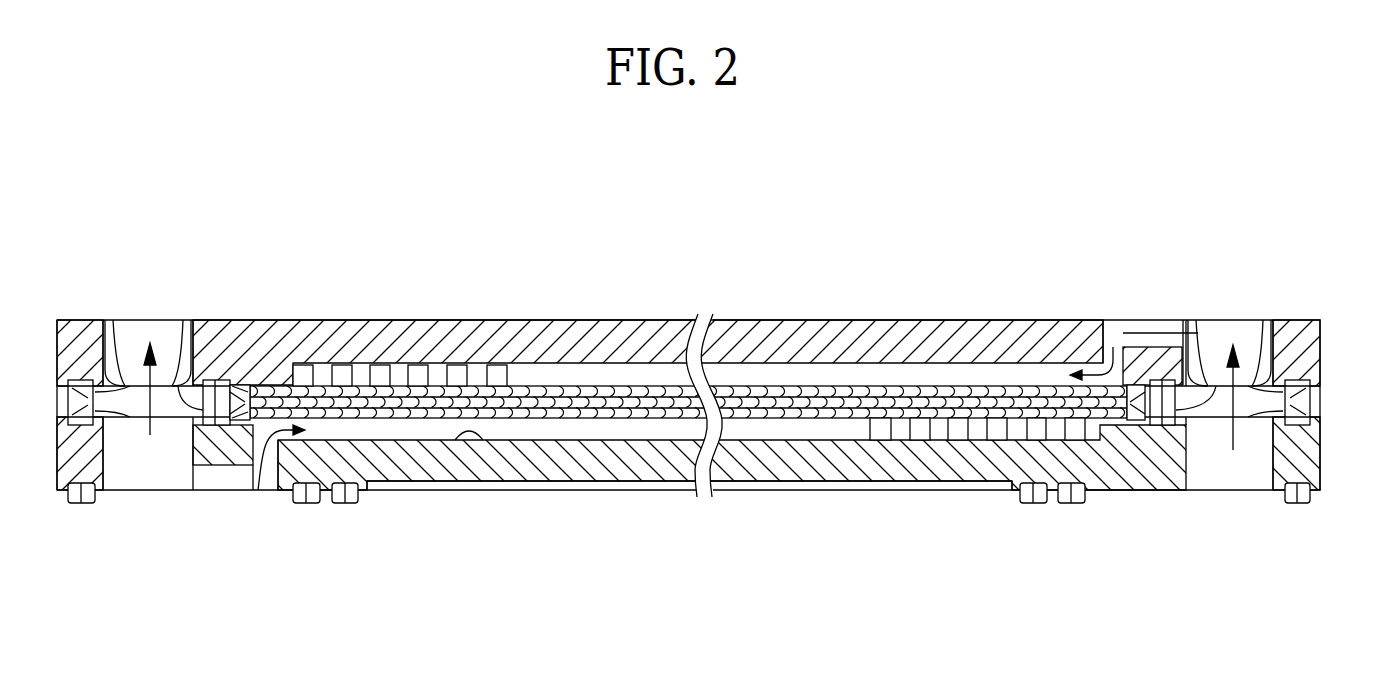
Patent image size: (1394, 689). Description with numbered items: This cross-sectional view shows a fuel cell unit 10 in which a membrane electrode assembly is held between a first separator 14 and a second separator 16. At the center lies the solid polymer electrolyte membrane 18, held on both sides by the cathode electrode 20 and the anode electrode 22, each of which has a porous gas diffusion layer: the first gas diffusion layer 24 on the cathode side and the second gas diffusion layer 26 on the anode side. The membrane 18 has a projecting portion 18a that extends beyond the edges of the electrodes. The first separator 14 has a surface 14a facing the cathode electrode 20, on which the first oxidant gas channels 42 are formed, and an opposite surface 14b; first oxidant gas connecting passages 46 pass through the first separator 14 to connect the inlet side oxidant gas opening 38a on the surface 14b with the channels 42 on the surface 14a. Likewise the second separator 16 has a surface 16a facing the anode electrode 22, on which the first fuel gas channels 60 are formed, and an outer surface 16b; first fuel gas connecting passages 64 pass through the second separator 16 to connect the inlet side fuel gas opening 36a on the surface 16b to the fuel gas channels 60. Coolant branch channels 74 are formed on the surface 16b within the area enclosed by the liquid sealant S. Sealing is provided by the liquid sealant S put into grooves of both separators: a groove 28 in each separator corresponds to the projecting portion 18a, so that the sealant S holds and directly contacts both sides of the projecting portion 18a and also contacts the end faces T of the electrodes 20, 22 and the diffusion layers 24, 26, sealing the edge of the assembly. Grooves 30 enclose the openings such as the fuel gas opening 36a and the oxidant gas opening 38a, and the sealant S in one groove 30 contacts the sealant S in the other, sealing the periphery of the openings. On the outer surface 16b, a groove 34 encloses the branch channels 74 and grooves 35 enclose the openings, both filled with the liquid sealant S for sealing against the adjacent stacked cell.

The fuel cell unit 10 is at (887, 183).
The first separator 14 is at (913, 320).
The surface of first separator opposite the cathode electrode 14a is at (412, 440).
The surface of first separator opposite surface 14a 14b is at (853, 320).
The second separator 16 is at (858, 491).
The surface of second separator 16a is at (482, 440).
The surface of second separator 16b is at (288, 493).
The solid polymer electrolyte membrane 18 is at (532, 386).
The projecting portion 18a is at (1135, 385).
The cathode electrode 20 is at (305, 365).
The anode electrode 22 is at (620, 410).
The first gas diffusion layer 24 is at (250, 392).
The second gas diffusion layer 26 is at (570, 422).
The groove 28 is at (217, 380).
The grooves 30 is at (66, 410).
The groove 34 is at (347, 503).
The grooves 35 is at (78, 503).
The inlet side fuel gas opening 36a is at (153, 325).
The inlet side oxidant gas opening 38a is at (1248, 477).
The first oxidant gas channels 42 is at (783, 372).
The first oxidant gas connecting passages 46 is at (1130, 333).
The first fuel gas channels 60 is at (517, 428).
The first fuel gas connecting passages 64 is at (217, 483).
The branch channels 74 is at (663, 487).
The liquid sealant S is at (113, 320).
The end faces T is at (235, 385).